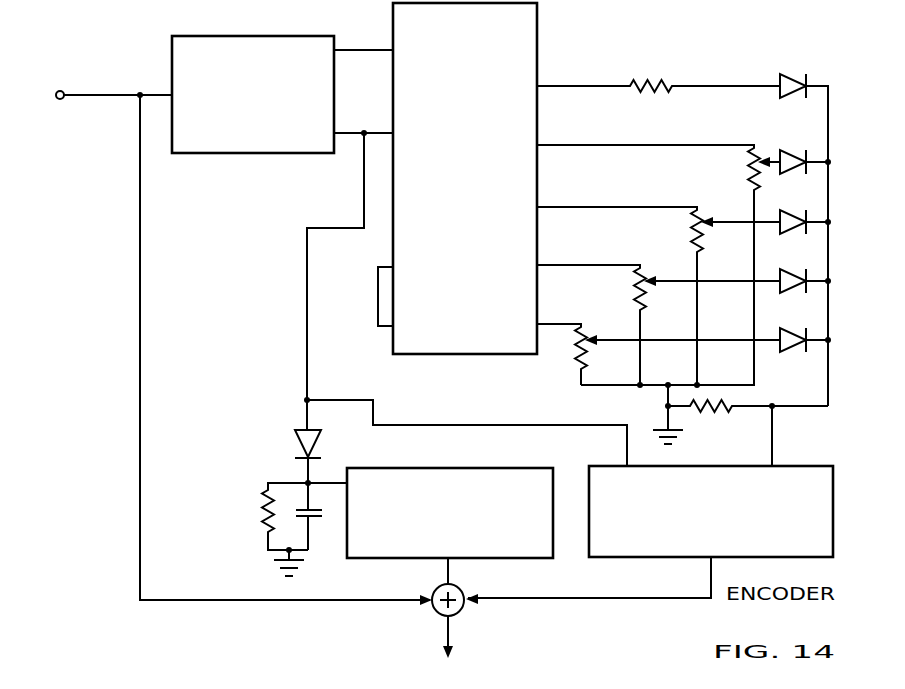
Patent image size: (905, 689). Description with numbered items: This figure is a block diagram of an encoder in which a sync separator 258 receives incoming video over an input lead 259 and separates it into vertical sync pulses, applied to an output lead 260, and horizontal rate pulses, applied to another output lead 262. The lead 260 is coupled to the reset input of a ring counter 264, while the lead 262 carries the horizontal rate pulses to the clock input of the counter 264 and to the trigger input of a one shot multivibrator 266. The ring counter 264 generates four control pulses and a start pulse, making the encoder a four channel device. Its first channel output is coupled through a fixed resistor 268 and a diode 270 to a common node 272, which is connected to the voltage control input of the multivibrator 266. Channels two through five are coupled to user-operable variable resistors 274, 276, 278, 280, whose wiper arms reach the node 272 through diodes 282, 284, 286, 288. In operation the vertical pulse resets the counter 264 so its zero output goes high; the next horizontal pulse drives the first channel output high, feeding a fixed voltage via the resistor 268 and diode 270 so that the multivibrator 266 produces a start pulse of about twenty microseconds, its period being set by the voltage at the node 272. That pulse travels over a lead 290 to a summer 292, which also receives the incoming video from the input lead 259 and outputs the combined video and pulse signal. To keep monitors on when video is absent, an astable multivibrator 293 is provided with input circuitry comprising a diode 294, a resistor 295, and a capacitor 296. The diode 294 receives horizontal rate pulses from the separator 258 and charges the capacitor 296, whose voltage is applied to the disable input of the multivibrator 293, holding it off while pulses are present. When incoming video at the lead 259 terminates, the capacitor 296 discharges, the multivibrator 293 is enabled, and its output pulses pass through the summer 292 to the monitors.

The sync separator 258 is at (238, 156).
The input lead 259 is at (127, 100).
The output lead 260 is at (346, 46).
The output lead 262 is at (348, 140).
The ring counter 264 is at (540, 62).
The one shot multivibrator 266 is at (714, 466).
The fixed resistor 268 is at (657, 80).
The diode 270 is at (782, 79).
The common node 272 is at (768, 402).
The variable resistor 274 is at (751, 172).
The variable resistor 276 is at (690, 236).
The variable resistor 278 is at (636, 295).
The variable resistor 280 is at (575, 353).
The diode 282 is at (784, 155).
The diode 284 is at (784, 215).
The diode 286 is at (784, 274).
The diode 288 is at (784, 333).
The lead 290 is at (528, 600).
The summer 292 is at (432, 609).
The astable multivibrator 293 is at (516, 468).
The diode 294 is at (296, 442).
The resistor 295 is at (262, 519).
The capacitor 296 is at (313, 520).